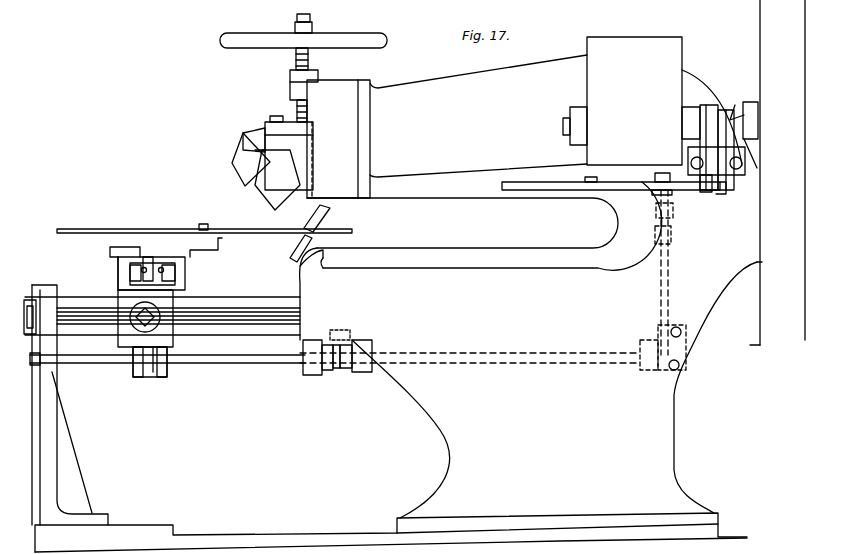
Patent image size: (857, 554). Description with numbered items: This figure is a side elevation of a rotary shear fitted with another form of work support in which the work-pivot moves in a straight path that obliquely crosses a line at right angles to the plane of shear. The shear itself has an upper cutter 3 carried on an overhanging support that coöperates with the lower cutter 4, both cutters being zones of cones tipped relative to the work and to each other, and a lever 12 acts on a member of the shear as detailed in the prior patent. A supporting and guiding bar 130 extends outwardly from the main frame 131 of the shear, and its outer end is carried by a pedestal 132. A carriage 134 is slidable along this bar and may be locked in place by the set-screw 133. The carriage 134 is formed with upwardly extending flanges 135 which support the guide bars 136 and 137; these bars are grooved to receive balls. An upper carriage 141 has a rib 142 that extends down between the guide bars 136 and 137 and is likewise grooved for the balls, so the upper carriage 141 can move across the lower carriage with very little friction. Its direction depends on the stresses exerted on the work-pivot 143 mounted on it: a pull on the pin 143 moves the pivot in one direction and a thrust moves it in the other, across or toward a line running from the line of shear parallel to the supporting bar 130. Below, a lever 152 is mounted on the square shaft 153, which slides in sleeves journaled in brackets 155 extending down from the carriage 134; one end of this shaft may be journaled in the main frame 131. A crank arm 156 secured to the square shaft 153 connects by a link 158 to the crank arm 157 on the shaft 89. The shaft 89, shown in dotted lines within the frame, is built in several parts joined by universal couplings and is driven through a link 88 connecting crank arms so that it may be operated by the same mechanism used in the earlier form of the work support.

The upper cutter 3 is at (322, 212).
The lower cutter 4 is at (290, 247).
The lever 12 is at (556, 190).
The link 88 is at (660, 292).
The shaft 89 is at (506, 353).
The supporting and guiding bar 130 is at (252, 305).
The main frame 131 is at (531, 350).
The pedestal 132 is at (48, 458).
The set-screw 133 is at (136, 322).
The carriage 134 is at (160, 293).
The upwardly extending flanges 135 is at (124, 268).
The guide bar 136 is at (122, 282).
The guide bar 137 is at (171, 275).
The upper carriage 141 is at (214, 245).
The rib 142 is at (148, 256).
The work-pivot 143 is at (203, 224).
The lever 152 is at (153, 377).
The square shaft 153 is at (228, 360).
The brackets 155 is at (134, 372).
The crank arm 156 is at (332, 377).
The crank arm 157 is at (350, 378).
The link 158 is at (354, 341).